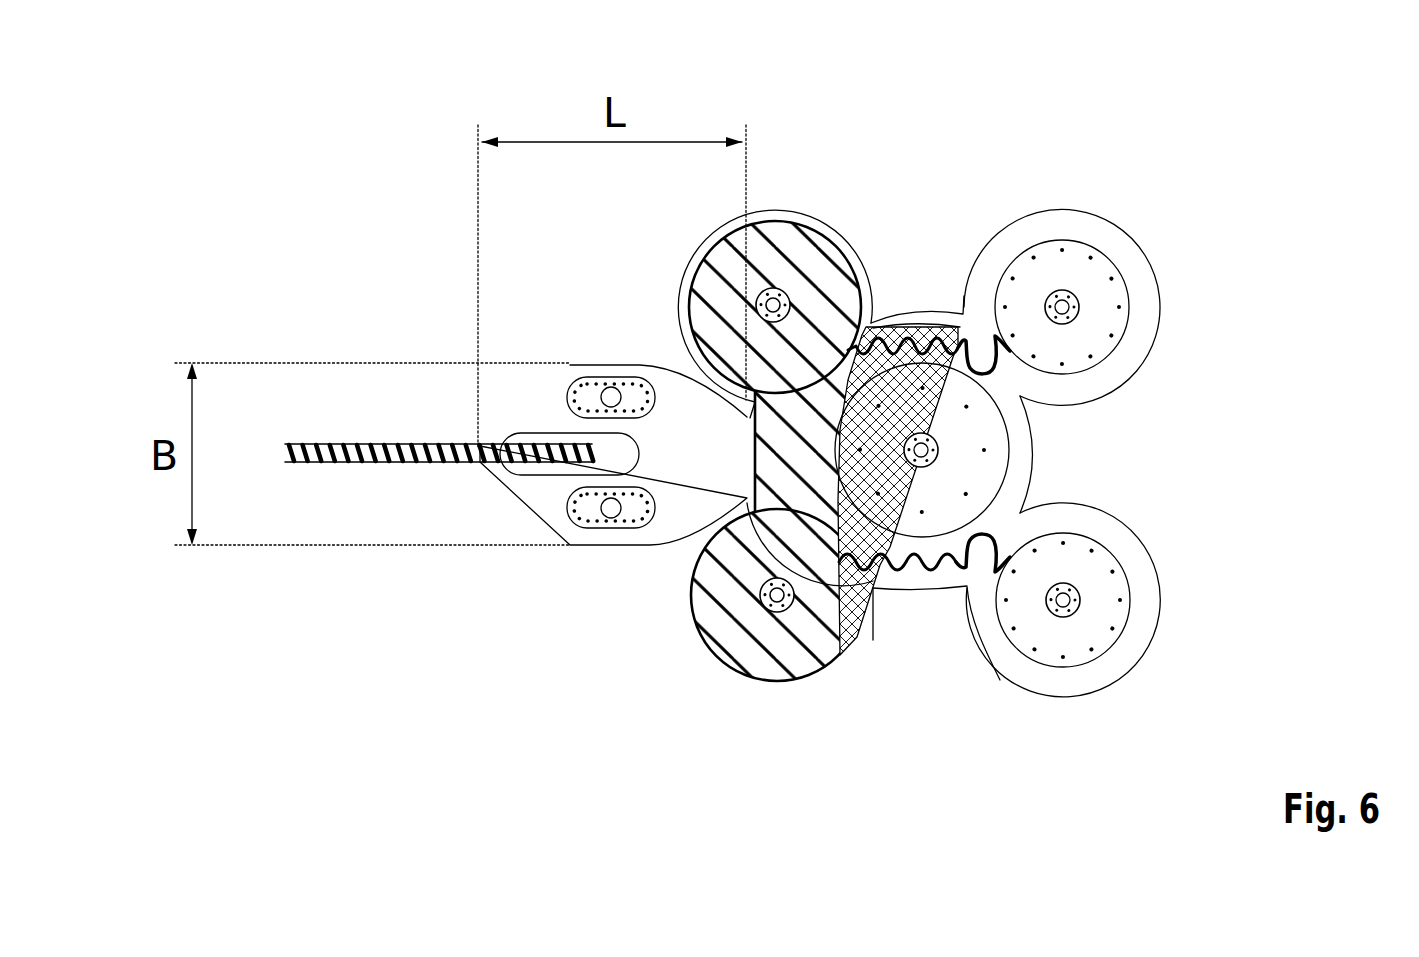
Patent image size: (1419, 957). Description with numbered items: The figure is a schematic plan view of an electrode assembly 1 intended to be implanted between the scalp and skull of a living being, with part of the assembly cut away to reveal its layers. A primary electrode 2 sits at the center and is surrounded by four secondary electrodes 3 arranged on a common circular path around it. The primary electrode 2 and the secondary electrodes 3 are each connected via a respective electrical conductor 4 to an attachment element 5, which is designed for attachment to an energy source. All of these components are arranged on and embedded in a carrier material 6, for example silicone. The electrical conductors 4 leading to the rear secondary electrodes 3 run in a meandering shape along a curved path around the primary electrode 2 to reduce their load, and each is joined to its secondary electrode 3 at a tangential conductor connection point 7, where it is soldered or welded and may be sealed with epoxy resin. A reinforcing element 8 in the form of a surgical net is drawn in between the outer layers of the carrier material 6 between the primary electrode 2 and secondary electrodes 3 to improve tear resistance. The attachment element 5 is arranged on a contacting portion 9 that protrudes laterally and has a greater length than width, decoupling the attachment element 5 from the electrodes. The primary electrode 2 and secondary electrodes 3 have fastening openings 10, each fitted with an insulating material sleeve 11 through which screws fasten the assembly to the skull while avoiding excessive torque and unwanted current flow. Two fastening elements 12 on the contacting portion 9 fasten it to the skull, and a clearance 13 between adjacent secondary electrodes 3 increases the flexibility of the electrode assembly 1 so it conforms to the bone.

The electrode assembly 1 is at (418, 210).
The primary electrode 2 is at (990, 478).
The secondary electrodes 3 is at (1100, 330).
The electrical conductor 4 is at (933, 322).
The attachment element 5 is at (520, 447).
The carrier material 6 is at (742, 612).
The tangential conductor connection point 7 is at (995, 343).
The reinforcing element 8 is at (840, 655).
The contacting portion 9 is at (568, 365).
The fastening openings 10 is at (932, 450).
The insulating material sleeve 11 is at (738, 284).
The fastening elements 12 is at (590, 526).
The clearance 13 is at (893, 280).